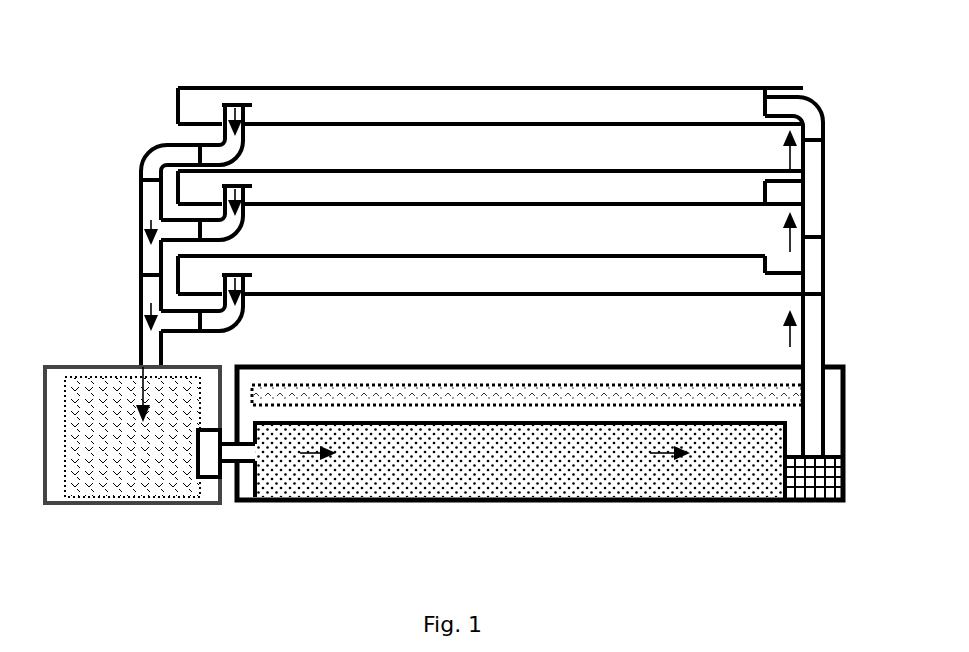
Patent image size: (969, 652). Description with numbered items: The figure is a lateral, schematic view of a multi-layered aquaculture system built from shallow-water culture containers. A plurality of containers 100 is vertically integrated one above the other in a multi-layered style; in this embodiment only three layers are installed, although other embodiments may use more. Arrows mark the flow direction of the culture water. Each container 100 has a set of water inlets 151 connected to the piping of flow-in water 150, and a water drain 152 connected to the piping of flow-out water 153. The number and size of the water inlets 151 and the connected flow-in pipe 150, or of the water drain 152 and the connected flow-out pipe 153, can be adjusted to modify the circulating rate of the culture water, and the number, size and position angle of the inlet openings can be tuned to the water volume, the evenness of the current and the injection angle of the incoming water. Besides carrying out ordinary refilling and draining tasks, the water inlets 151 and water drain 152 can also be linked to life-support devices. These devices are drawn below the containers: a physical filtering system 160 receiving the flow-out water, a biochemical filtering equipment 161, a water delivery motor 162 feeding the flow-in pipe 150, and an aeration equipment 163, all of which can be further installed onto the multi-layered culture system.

The container 100 is at (604, 105).
The piping of flow-in water 150 is at (823, 267).
The water inlet 151 is at (765, 103).
The water drain 152 is at (233, 107).
The piping of flow-out water 153 is at (160, 145).
The physical filtering system 160 is at (83, 387).
The biochemical filtering equipment 161 is at (509, 500).
The water delivery motor 162 is at (806, 502).
The aeration equipment 163 is at (492, 388).